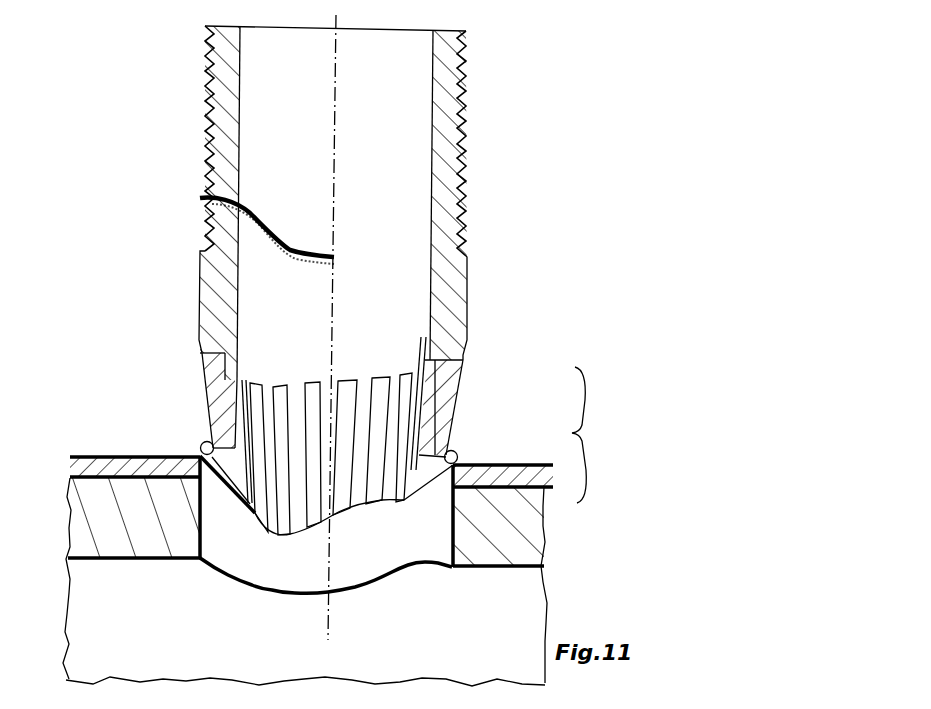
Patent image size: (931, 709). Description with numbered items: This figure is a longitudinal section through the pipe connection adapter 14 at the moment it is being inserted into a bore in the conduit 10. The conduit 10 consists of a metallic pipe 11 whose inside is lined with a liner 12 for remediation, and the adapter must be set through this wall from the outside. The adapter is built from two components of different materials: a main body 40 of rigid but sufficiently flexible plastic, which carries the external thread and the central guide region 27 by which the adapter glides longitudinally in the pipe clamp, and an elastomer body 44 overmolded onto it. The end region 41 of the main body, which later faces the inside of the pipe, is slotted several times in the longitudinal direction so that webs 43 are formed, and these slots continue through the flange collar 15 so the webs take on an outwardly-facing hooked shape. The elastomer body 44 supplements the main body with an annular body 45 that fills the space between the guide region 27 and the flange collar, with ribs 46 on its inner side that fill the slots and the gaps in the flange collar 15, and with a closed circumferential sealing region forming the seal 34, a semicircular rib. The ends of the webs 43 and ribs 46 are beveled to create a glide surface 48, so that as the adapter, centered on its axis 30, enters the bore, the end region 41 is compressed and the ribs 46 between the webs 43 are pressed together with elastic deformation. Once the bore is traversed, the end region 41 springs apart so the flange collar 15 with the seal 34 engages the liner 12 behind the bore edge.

The conduit 10 is at (112, 430).
The pipe 11 is at (140, 455).
The liner 12 is at (138, 545).
The pipe connection adapter 14 is at (499, 176).
The flange collar 15 is at (368, 522).
The central guide region 27 is at (470, 320).
The axis 30 is at (246, 225).
The seal 34 is at (457, 449).
The main body 40 is at (430, 212).
The end region 41 is at (598, 435).
The webs 43 is at (356, 497).
The elastomer body 44 is at (454, 397).
The annular body 45 is at (217, 389).
The ribs 46 is at (313, 510).
The glide surface 48 is at (227, 501).